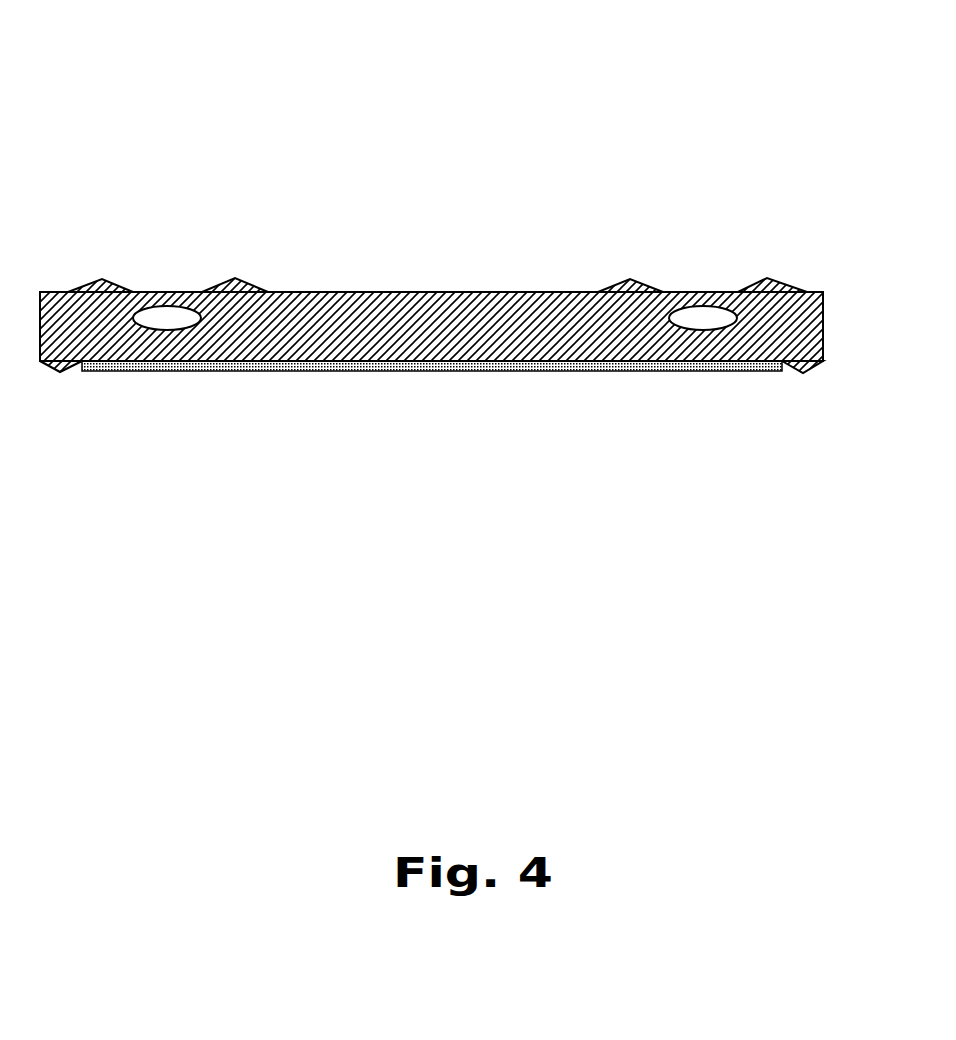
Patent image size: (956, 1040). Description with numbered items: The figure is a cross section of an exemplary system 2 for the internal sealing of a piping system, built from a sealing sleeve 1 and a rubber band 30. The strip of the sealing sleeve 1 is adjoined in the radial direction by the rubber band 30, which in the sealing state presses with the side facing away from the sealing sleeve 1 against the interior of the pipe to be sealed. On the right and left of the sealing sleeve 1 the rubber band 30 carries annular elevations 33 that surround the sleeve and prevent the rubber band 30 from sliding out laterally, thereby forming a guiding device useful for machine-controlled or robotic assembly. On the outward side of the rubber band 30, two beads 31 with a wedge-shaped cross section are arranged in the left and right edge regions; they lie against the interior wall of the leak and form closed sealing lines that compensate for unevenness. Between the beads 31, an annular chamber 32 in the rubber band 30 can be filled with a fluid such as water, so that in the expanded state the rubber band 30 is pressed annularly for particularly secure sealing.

The sealing sleeve 1 is at (475, 365).
The system 2 is at (449, 336).
The rubber band 30 is at (330, 330).
The beads 31 is at (100, 283).
The annular chamber 32 is at (168, 322).
The annular elevations 33 is at (55, 368).